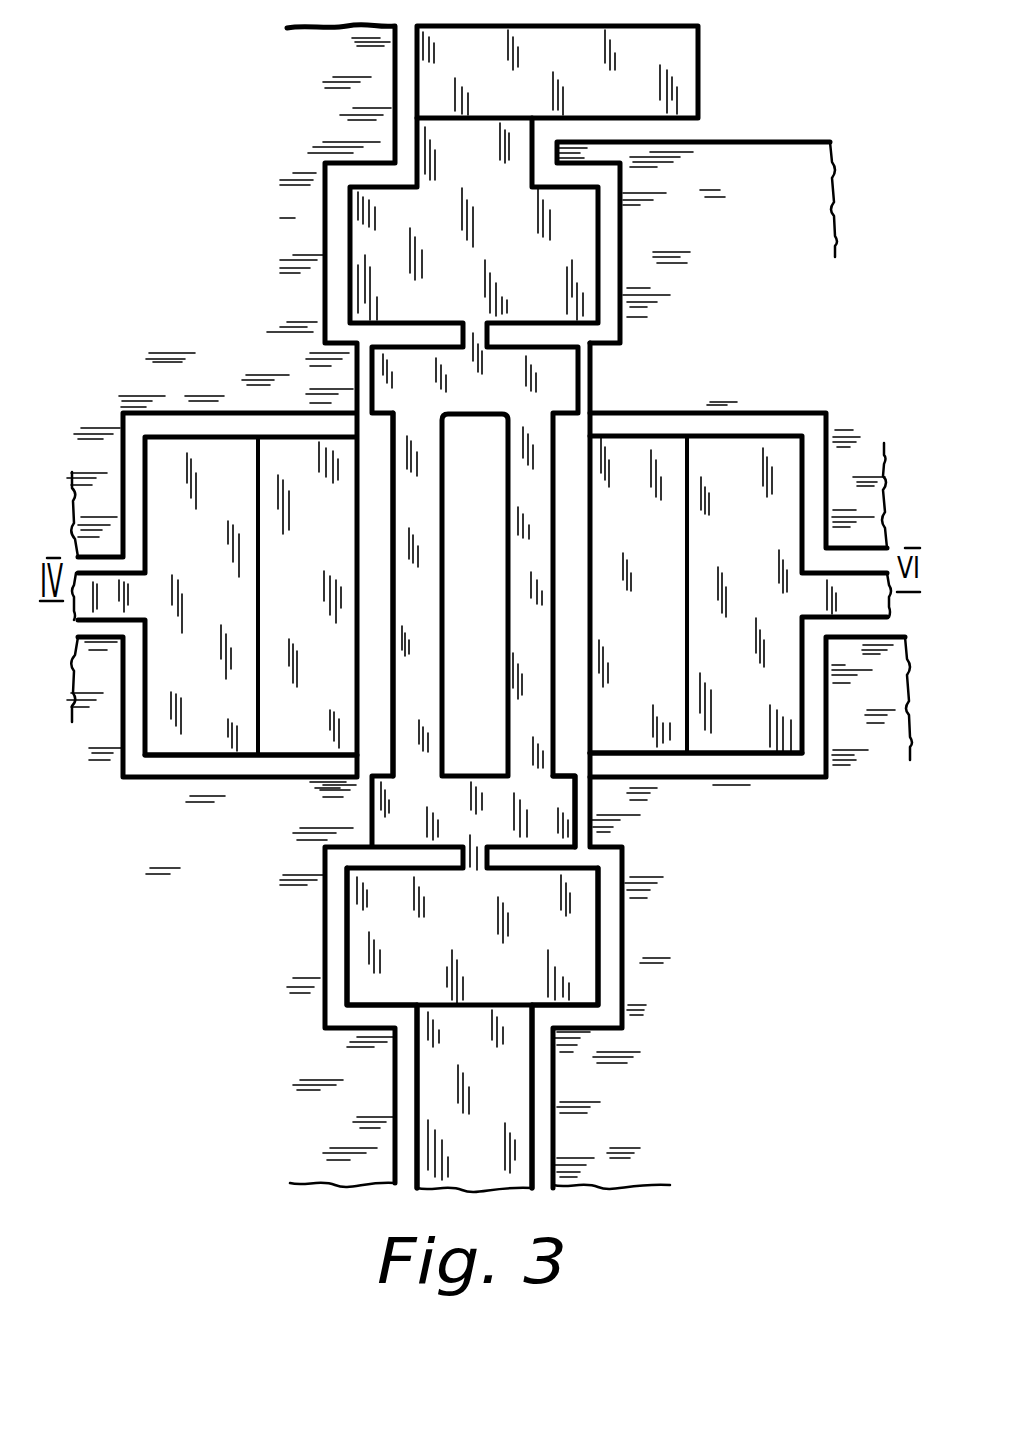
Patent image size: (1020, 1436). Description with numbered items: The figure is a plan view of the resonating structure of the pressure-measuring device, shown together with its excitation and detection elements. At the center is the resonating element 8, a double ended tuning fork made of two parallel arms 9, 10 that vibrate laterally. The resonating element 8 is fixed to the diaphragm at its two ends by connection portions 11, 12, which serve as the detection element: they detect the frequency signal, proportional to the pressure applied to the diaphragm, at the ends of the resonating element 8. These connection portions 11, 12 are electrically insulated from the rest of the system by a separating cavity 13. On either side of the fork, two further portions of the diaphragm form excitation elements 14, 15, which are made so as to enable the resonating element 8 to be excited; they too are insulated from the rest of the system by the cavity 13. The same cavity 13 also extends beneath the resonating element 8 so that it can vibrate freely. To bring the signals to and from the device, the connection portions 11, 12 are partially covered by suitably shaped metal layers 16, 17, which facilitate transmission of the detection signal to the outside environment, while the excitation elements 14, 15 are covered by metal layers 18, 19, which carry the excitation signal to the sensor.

The resonating element 8 is at (551, 814).
The arm 9 is at (421, 441).
The arm 10 is at (545, 448).
The connection portion 11 is at (573, 280).
The connection portion 12 is at (573, 977).
The separating cavity 13 is at (340, 180).
The excitation element 14 is at (290, 743).
The excitation element 15 is at (657, 730).
The metal layer 16 is at (680, 83).
The metal layer 17 is at (513, 1123).
The metal layer 18 is at (190, 462).
The metal layer 19 is at (753, 470).